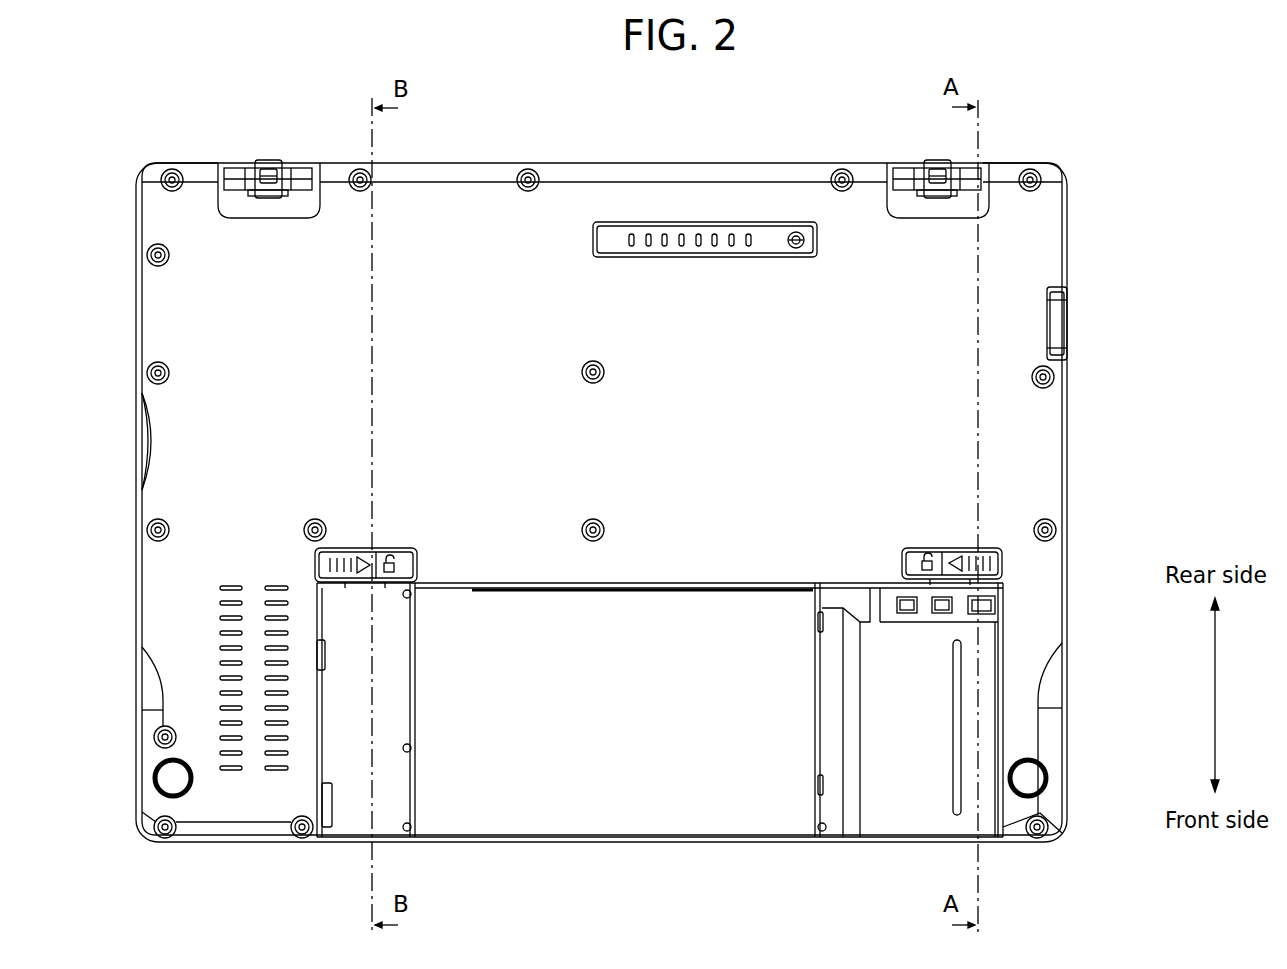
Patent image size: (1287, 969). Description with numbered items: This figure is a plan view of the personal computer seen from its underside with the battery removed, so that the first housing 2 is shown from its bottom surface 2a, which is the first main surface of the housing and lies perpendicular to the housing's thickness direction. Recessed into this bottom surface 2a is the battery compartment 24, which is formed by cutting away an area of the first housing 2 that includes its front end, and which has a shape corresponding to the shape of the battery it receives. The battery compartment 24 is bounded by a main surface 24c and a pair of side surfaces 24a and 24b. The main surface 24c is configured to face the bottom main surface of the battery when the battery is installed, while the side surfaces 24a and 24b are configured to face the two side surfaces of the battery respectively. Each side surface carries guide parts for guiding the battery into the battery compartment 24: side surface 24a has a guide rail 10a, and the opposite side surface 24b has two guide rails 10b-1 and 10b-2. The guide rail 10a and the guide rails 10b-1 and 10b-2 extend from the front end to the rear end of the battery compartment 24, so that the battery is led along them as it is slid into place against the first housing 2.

The first housing 2 is at (1067, 495).
The bottom surface 2a is at (559, 265).
The battery compartment 24 is at (637, 797).
The side surface 24a is at (1003, 637).
The side surface 24b is at (317, 712).
The main surface 24c is at (893, 797).
The guide rail 10a is at (987, 747).
The guide rail 10b-1 is at (330, 805).
The guide rail 10b-2 is at (322, 655).